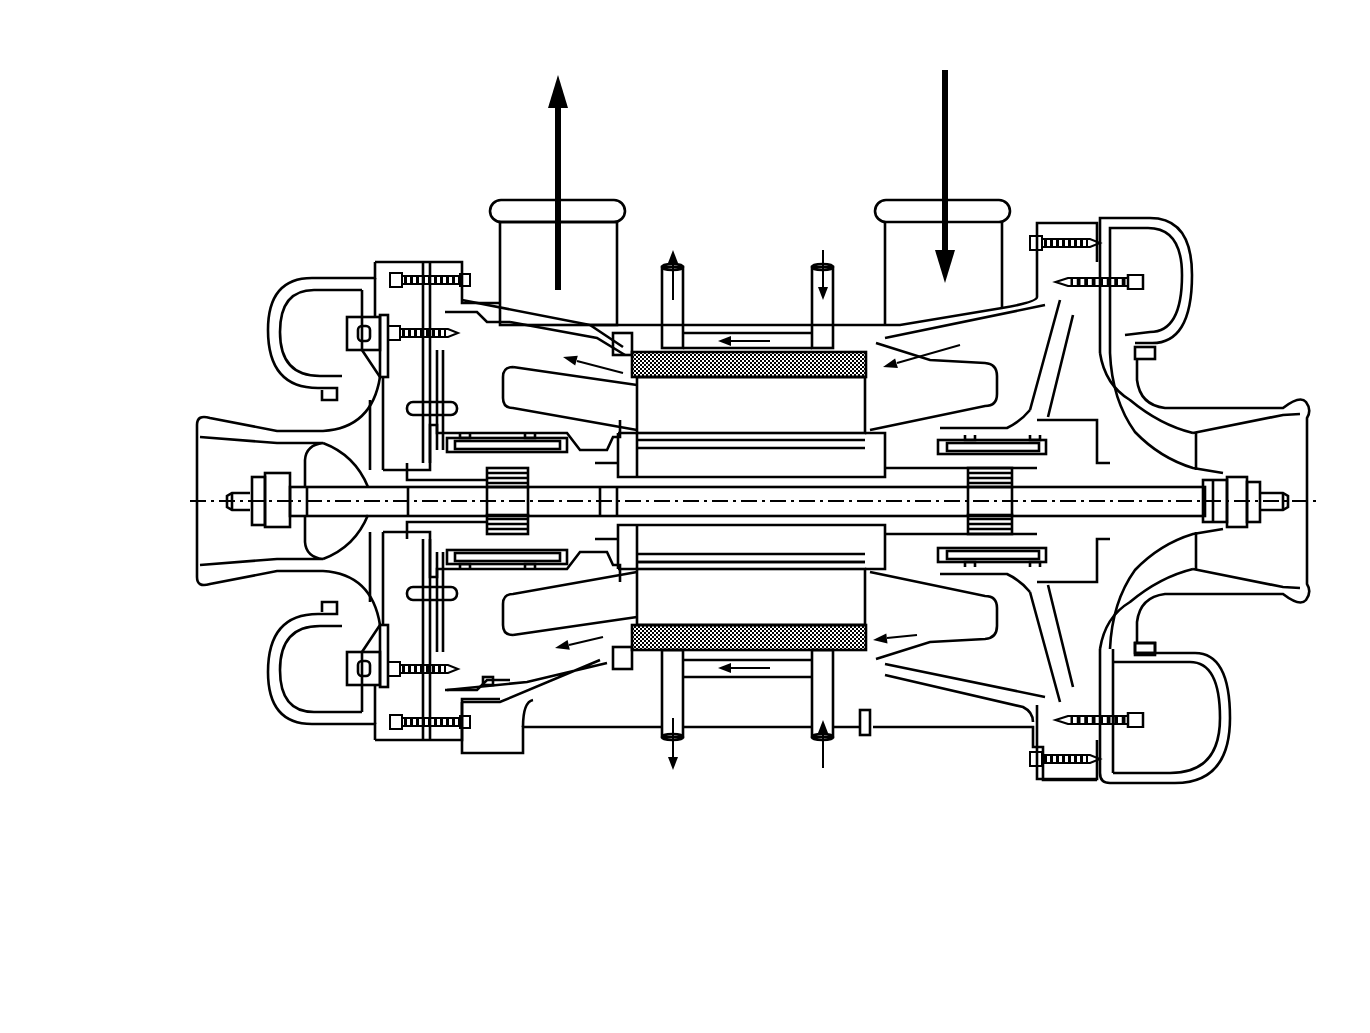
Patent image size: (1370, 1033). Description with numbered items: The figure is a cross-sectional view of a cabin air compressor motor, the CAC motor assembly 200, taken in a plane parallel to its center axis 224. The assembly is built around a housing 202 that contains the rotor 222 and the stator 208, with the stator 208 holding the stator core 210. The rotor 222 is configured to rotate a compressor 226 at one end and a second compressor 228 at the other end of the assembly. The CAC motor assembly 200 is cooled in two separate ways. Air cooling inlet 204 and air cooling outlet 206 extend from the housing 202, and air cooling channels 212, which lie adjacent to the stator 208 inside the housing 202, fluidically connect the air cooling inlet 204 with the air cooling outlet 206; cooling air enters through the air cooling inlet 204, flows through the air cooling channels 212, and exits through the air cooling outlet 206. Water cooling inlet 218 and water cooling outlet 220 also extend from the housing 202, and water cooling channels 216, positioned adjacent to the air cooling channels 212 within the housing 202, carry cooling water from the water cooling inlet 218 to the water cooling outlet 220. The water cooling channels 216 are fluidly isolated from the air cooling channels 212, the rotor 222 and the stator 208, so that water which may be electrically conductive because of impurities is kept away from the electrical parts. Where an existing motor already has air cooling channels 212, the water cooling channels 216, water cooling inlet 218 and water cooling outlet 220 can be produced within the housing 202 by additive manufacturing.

The CAC motor assembly 200 is at (1230, 138).
The housing 202 is at (702, 325).
The air cooling inlet 204 is at (975, 200).
The air cooling outlet 206 is at (582, 200).
The stator 208 is at (540, 372).
The stator core 210 is at (685, 408).
The air cooling channels 212 is at (657, 652).
The water cooling channels 216 is at (788, 343).
The water cooling inlet 218 is at (835, 303).
The water cooling outlet 220 is at (662, 302).
The rotor 222 is at (835, 540).
The center axis 224 is at (1175, 500).
The compressor 226 is at (333, 412).
The compressor 228 is at (1148, 378).